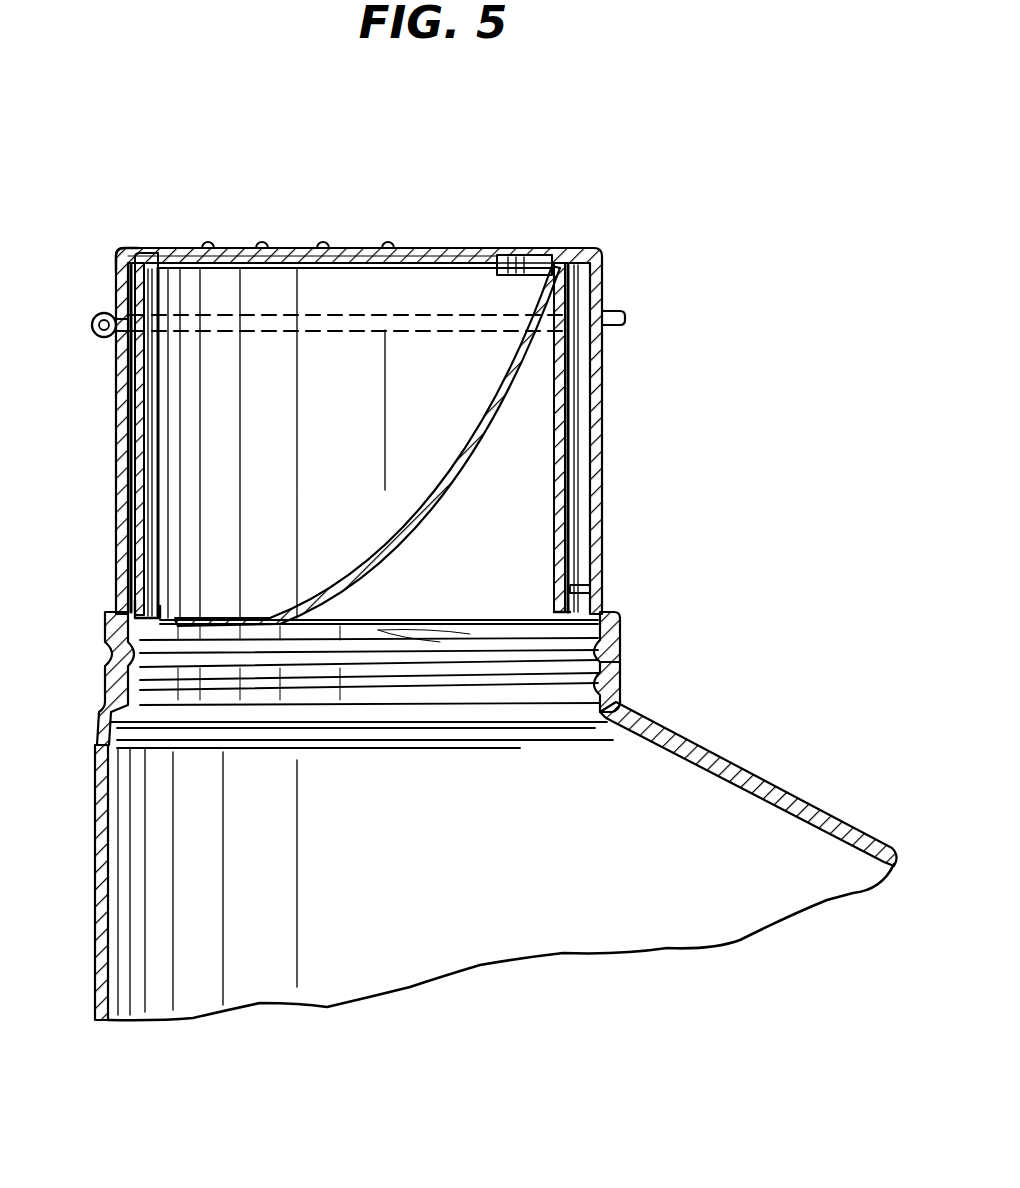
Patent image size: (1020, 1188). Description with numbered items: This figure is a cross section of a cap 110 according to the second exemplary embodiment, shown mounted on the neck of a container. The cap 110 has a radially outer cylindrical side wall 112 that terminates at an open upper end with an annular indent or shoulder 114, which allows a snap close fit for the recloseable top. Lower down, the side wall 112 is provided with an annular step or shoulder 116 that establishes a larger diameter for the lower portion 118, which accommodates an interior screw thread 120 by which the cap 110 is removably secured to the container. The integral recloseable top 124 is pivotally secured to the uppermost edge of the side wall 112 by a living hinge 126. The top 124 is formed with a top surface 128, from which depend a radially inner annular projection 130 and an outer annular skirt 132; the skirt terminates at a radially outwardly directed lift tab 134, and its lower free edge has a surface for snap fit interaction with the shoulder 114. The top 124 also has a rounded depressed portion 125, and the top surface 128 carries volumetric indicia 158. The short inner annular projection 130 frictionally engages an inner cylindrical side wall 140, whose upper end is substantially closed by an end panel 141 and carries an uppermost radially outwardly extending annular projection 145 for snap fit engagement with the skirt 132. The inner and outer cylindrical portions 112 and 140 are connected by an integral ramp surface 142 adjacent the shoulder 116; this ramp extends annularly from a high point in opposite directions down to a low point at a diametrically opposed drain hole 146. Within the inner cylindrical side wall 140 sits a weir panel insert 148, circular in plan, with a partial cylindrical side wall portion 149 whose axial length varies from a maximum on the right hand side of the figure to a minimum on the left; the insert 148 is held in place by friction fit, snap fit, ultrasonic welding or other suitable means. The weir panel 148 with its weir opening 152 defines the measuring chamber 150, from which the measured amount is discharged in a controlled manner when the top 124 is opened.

The cap 110 is at (640, 217).
The radially outer cylindrical side wall 112 is at (602, 496).
The integral recloseable top 124 is at (310, 246).
The top surface 128 is at (405, 248).
The volumetric indicia 158 is at (208, 243).
The rounded depressed portion 125 is at (524, 254).
The outer annular skirt 132 is at (128, 256).
The living hinge 126 is at (102, 313).
The lift tab 134 is at (624, 321).
The inner cylindrical side wall 140 is at (150, 484).
The annular projection 145 is at (160, 250).
The end panel 141 is at (320, 270).
The drain hole 146 is at (128, 612).
The radially inner annular projection 130 is at (602, 292).
The annular indent or shoulder 114 is at (560, 386).
The ramp surface 142 is at (622, 438).
The partial cylindrical side wall portion 149 is at (560, 542).
The measuring chamber 150 is at (350, 420).
The weir panel insert 148 is at (460, 454).
The weir opening 152 is at (196, 616).
The interior screw thread 120 is at (114, 664).
The annular step or shoulder 116 is at (610, 620).
The lower portion 118 is at (612, 682).